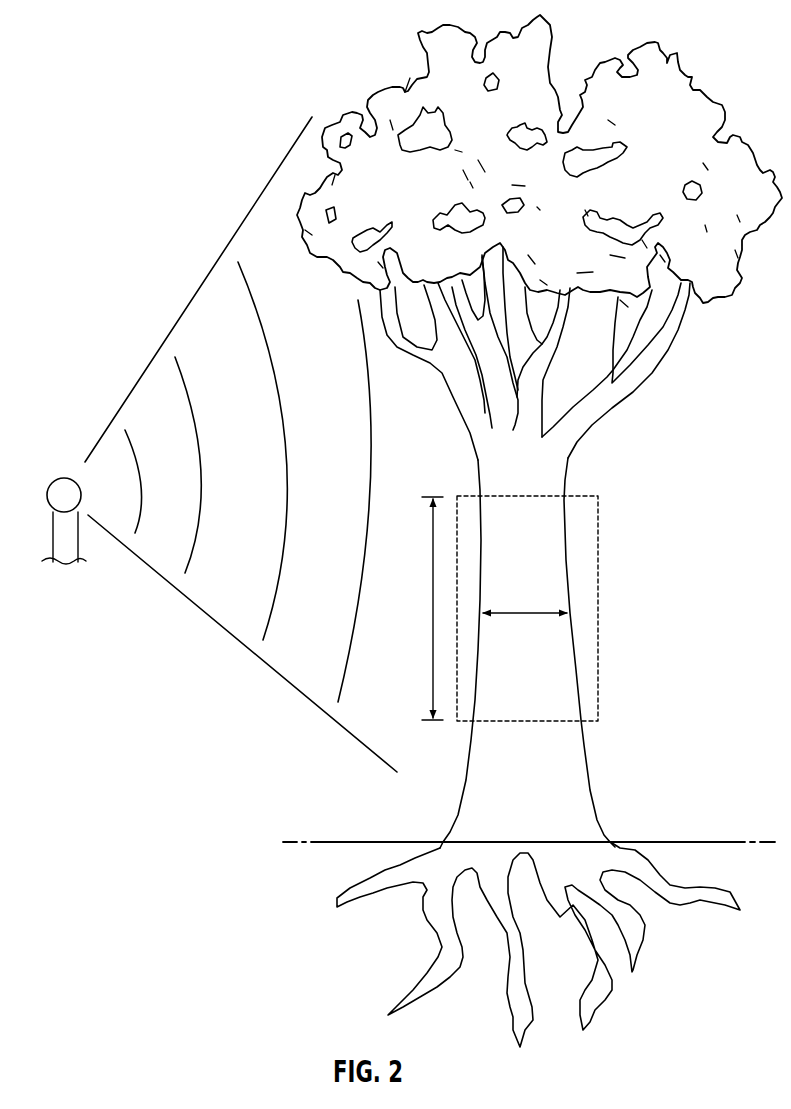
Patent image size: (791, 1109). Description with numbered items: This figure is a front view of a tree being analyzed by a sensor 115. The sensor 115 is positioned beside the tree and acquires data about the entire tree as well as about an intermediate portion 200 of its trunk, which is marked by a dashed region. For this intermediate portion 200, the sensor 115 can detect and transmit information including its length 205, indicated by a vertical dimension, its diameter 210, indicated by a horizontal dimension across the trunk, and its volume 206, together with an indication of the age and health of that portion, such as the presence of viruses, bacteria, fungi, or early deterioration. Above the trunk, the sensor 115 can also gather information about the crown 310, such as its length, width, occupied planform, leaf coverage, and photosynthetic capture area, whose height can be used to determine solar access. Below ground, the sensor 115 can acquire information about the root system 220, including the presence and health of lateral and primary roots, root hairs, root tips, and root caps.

The sensor 115 is at (64, 477).
The crown 310 is at (675, 90).
The intermediate portion 200 is at (599, 490).
The length 205 is at (430, 590).
The diameter 210 is at (521, 611).
The volume 206 is at (543, 659).
The root system 220 is at (354, 927).